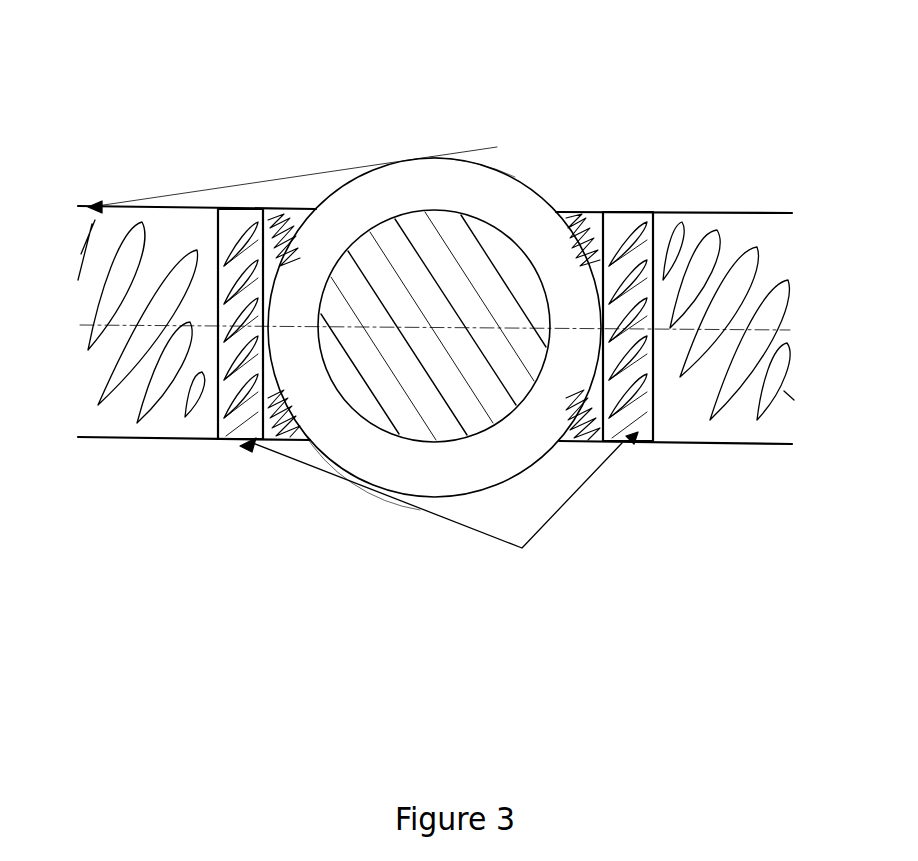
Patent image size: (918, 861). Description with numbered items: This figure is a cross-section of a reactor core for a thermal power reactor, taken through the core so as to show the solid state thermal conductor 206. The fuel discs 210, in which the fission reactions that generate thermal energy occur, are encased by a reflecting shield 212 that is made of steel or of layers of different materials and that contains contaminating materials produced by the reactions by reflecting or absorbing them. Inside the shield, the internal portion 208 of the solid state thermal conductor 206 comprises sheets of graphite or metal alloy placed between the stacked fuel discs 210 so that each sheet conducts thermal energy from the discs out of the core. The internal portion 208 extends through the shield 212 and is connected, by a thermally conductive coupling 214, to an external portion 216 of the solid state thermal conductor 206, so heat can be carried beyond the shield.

The solid state thermal conductor 206 is at (328, 160).
The internal portion 208 is at (587, 235).
The fuel disc 210 is at (378, 408).
The reflecting shield 212 is at (378, 203).
The thermally conductive coupling 214 is at (439, 520).
The external portion 216 is at (749, 248).